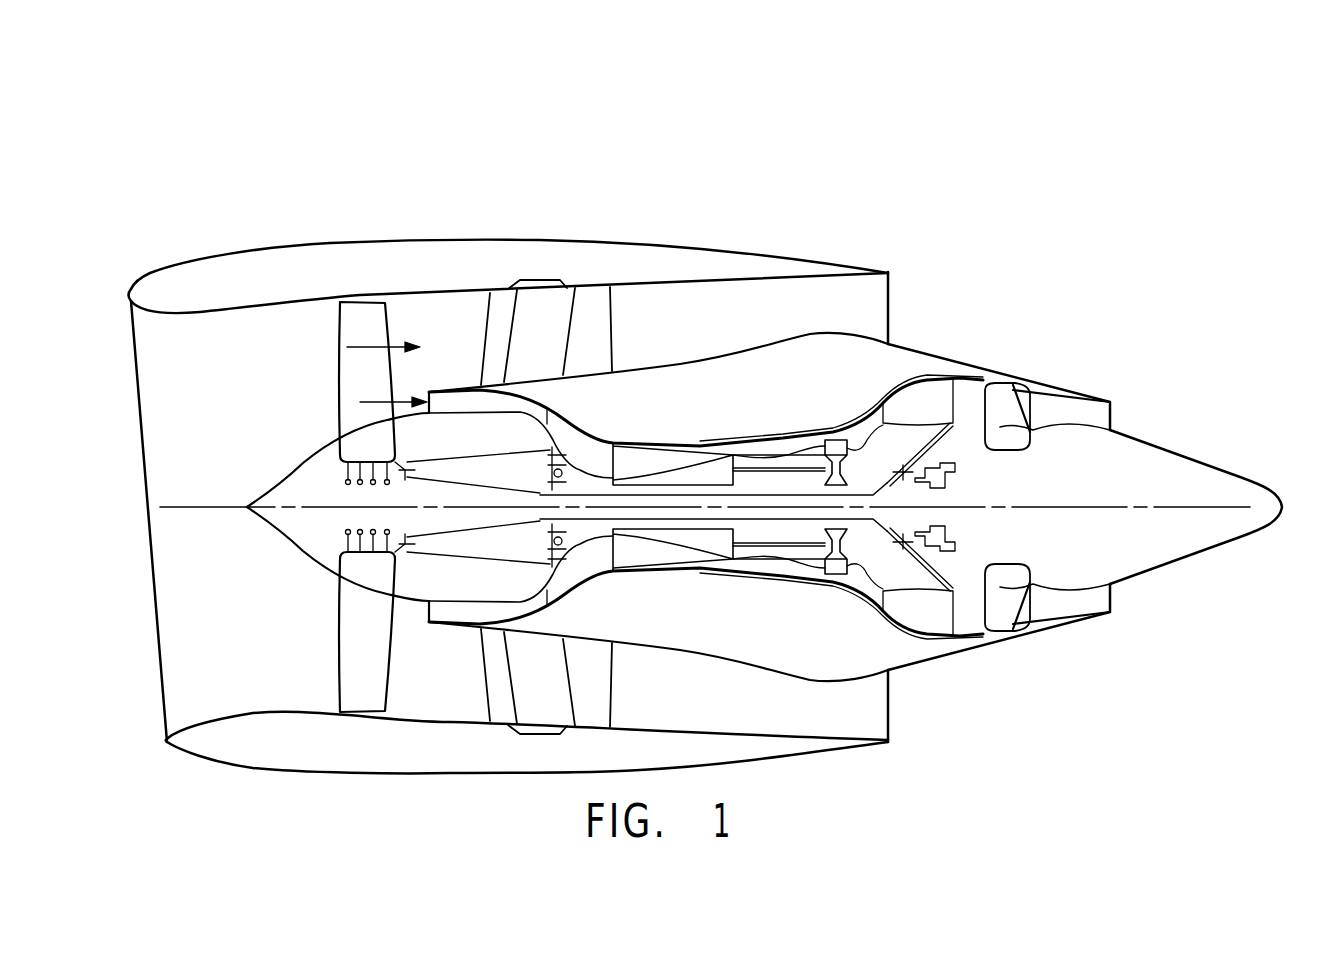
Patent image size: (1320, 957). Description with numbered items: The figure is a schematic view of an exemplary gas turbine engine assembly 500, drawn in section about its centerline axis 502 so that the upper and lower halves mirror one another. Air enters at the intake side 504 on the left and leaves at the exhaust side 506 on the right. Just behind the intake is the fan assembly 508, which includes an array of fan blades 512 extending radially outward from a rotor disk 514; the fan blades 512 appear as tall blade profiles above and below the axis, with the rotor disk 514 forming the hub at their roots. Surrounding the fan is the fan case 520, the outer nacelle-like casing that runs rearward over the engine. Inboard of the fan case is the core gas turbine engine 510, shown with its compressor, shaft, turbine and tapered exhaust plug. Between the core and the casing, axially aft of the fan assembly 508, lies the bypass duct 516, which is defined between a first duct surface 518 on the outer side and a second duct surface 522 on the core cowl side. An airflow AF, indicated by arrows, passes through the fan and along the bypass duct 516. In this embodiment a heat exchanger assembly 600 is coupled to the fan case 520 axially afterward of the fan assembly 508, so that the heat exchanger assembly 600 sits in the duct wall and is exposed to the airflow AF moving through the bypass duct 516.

The gas turbine engine assembly 500 is at (917, 98).
The centerline axis 502 is at (198, 508).
The intake side 504 is at (153, 652).
The exhaust side 506 is at (1038, 678).
The fan assembly 508 is at (307, 388).
The core gas turbine engine 510 is at (923, 345).
The fan blades 512 is at (340, 636).
The rotor disk 514 is at (330, 575).
The bypass duct 516 is at (817, 290).
The first duct surface 518 is at (683, 290).
The fan case 520 is at (430, 258).
The second duct surface 522 is at (767, 341).
The heat exchanger assembly 600 is at (568, 735).
The airflow AF is at (368, 346).